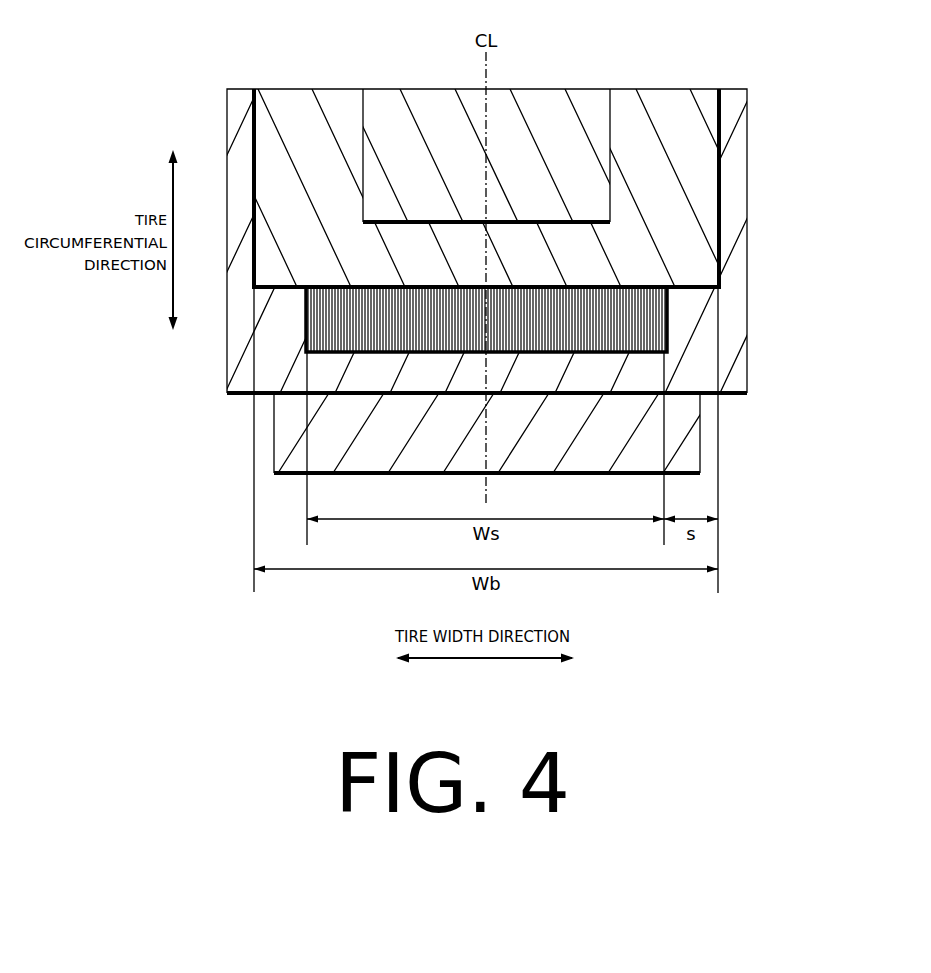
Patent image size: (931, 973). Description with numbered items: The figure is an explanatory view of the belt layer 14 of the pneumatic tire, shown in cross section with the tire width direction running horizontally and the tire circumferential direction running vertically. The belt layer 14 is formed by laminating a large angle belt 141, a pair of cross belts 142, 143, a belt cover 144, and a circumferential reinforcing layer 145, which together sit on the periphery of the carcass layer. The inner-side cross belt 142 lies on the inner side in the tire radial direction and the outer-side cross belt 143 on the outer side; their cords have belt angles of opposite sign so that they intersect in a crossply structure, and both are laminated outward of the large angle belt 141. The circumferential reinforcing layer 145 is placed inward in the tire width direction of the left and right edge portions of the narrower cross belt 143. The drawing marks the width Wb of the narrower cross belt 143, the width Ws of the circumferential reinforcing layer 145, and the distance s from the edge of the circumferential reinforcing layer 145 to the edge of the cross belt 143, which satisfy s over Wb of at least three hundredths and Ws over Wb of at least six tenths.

The belt layer 14 is at (742, 58).
The large angle belt 141 is at (700, 433).
The inner-side cross belt 142 is at (747, 367).
The outer-side cross belt 143 is at (719, 248).
The belt cover 144 is at (610, 195).
The circumferential reinforcing layer 145 is at (667, 323).